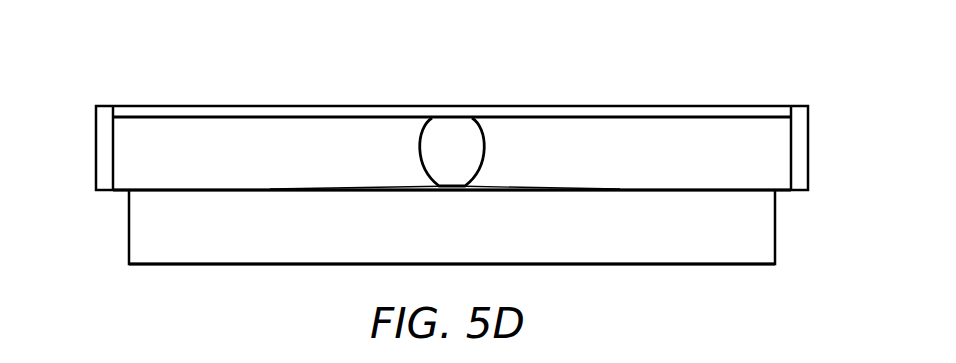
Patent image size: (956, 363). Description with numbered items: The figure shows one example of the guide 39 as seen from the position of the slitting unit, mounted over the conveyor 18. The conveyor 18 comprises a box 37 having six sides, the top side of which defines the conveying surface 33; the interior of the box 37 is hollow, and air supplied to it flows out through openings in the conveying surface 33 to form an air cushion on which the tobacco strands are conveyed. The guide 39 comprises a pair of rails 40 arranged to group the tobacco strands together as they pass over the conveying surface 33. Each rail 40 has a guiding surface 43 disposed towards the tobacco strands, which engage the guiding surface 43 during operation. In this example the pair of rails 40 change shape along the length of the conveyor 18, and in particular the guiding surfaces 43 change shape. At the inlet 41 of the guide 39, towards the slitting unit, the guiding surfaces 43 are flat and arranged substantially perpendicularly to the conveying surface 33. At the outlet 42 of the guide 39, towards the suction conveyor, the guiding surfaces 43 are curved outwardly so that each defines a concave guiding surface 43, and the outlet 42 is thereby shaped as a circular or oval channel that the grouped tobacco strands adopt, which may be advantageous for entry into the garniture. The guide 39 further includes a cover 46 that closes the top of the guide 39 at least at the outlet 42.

The conveyor 18 is at (132, 85).
The conveying surface 33 is at (592, 190).
The box 37 is at (752, 264).
The guide 39 is at (772, 62).
The rail 40 is at (316, 130).
The inlet 41 is at (104, 147).
The outlet 42 is at (466, 162).
The guiding surface 43 is at (241, 164).
The cover 46 is at (213, 113).